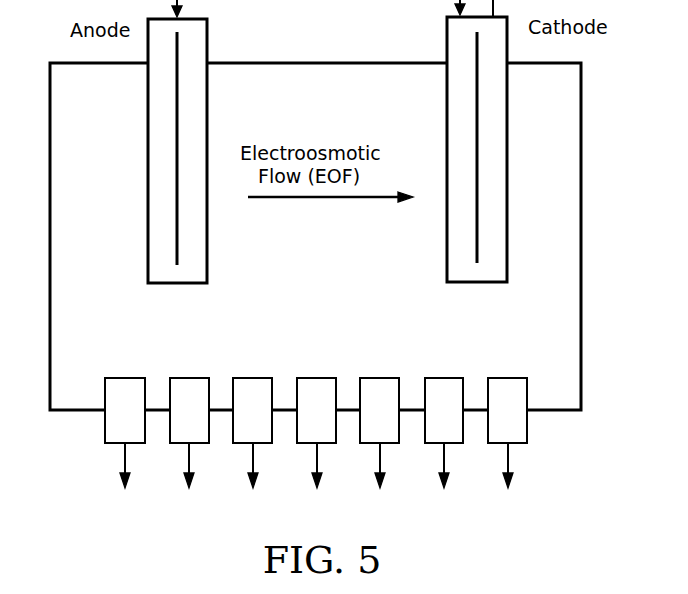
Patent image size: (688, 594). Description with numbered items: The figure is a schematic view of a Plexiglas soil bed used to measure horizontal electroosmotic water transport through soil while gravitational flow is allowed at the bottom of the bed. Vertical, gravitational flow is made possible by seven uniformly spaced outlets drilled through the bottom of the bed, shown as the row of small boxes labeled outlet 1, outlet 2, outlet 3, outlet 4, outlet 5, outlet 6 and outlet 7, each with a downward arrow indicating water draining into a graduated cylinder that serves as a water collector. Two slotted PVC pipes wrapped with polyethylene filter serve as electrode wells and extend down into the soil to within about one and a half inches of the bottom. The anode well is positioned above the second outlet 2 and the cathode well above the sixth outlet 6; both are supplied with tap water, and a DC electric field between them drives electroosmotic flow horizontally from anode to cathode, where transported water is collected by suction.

The outlet 1 is at (125, 421).
The outlet 2 is at (189, 421).
The outlet 3 is at (252, 421).
The outlet 4 is at (316, 421).
The outlet 5 is at (379, 421).
The outlet 6 is at (444, 421).
The outlet 7 is at (507, 421).